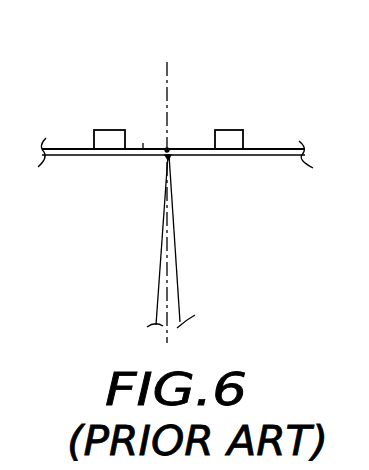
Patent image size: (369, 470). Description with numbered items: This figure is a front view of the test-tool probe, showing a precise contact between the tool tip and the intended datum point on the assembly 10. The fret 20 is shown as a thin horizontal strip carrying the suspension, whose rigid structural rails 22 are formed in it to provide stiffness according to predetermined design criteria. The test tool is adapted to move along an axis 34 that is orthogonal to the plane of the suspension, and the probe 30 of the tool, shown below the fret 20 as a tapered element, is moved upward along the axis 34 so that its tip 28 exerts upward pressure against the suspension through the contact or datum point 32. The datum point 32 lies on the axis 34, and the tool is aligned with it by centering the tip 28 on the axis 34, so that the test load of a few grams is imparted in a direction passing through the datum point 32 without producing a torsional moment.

The prior art sensor assembly 10 is at (143, 148).
The fret 20 is at (272, 147).
The rigid structural rails 22 is at (108, 130).
The tip 28 is at (170, 158).
The probe 30 is at (170, 292).
The contact or datum point 32 is at (171, 148).
The axis 34 is at (167, 75).